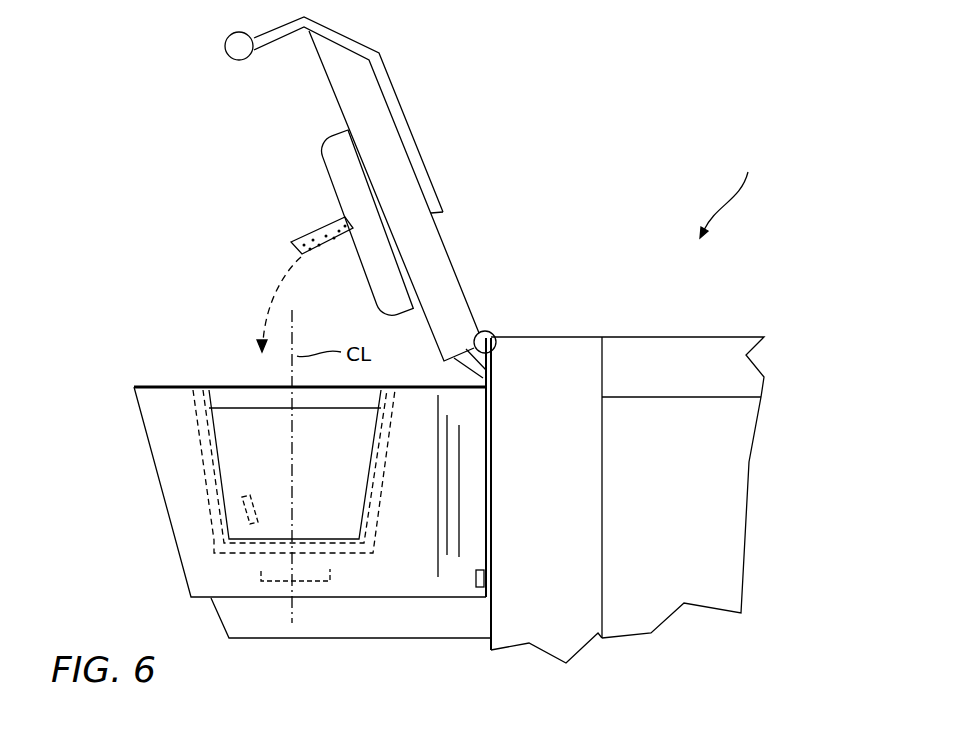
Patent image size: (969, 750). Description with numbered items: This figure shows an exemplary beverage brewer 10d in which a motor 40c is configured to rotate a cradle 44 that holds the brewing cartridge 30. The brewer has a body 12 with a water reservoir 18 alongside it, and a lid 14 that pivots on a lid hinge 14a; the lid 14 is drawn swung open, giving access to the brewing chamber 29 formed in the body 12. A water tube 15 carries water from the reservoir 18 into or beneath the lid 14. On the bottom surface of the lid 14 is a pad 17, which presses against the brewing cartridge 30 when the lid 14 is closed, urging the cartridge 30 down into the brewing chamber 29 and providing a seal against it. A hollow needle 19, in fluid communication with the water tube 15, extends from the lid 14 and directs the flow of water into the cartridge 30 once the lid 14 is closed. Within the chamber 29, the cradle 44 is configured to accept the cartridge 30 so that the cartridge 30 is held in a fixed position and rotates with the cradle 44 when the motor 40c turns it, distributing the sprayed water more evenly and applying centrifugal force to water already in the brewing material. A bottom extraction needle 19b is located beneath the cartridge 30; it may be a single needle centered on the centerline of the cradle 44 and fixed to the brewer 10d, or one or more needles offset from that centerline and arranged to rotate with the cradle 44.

The beverage brewer 10d is at (746, 189).
The body 12 is at (543, 546).
The lid 14 is at (362, 107).
The lid hinge 14a is at (484, 331).
The water tube 15 is at (491, 375).
The pad 17 is at (335, 168).
The water reservoir 18 is at (680, 531).
The hollow needle 19 is at (313, 232).
The bottom extraction needle 19b is at (250, 521).
The brewing chamber 29 is at (193, 415).
The brewing cartridge 30 is at (268, 454).
The motor 40c is at (280, 578).
The cradle 44 is at (202, 452).